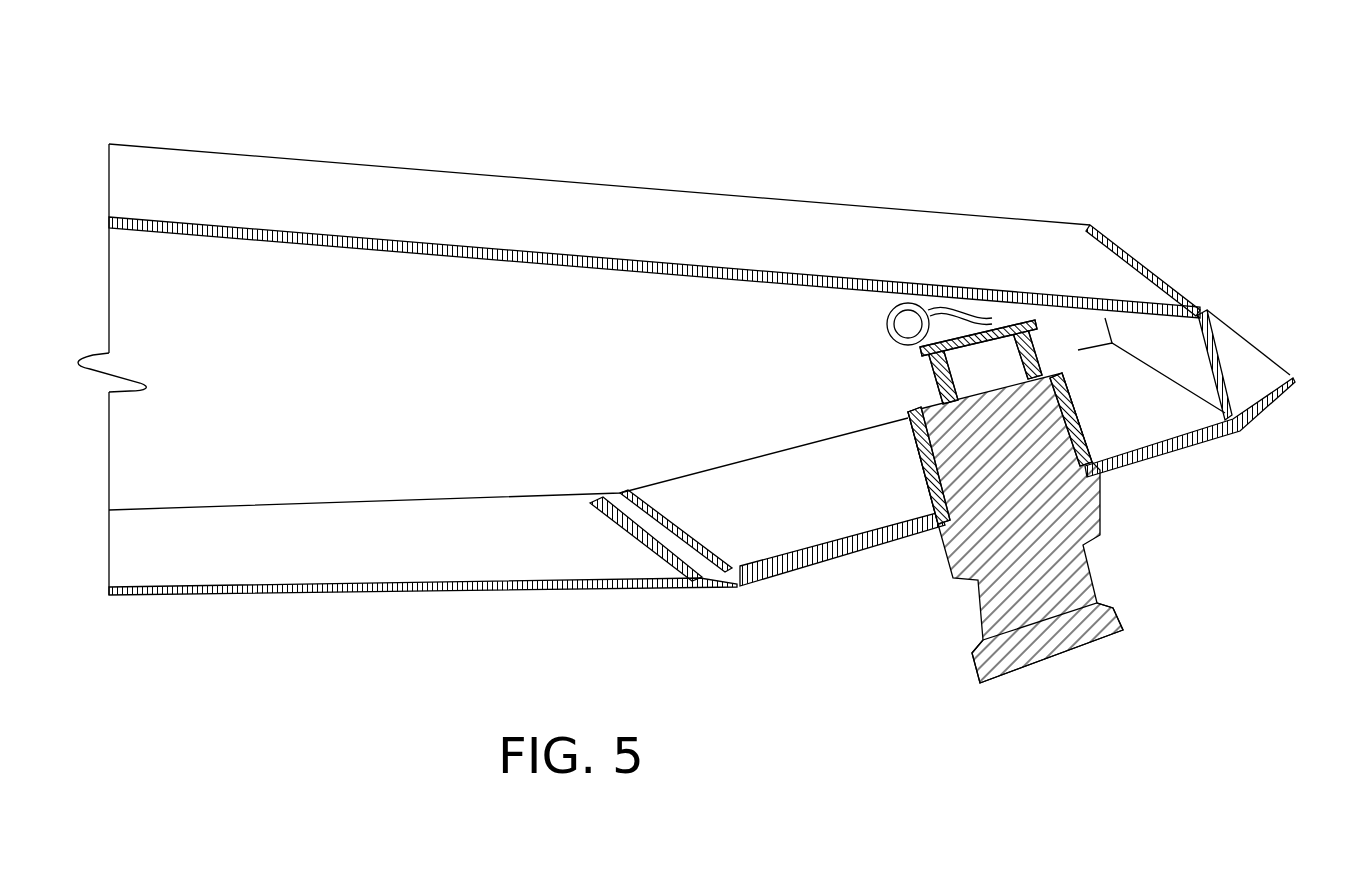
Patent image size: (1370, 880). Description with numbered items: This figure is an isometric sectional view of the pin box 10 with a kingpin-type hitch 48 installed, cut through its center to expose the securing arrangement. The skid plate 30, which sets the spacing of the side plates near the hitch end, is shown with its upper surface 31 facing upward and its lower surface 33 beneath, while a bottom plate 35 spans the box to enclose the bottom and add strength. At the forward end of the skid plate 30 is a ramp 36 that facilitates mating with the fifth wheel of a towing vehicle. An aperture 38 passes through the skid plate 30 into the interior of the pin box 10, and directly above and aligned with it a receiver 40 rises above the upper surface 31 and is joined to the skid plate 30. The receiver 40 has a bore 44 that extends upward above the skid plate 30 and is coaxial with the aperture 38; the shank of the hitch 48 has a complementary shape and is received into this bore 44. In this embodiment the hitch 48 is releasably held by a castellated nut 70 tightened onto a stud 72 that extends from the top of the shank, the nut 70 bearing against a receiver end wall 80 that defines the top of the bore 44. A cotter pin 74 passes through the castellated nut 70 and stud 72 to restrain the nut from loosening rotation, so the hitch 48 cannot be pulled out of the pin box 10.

The pin box 10 is at (675, 100).
The skid plate 30 is at (775, 578).
The upper surface 31 is at (757, 575).
The lower surface 33 is at (830, 558).
The bottom plate 35 is at (242, 593).
The ramp 36 is at (1248, 372).
The aperture 38 is at (1103, 472).
The receiver 40 is at (893, 540).
The bore 44 is at (1085, 410).
The hitch 48 is at (980, 690).
The castellated nut 70 is at (1050, 342).
The stud 72 is at (987, 363).
The cotter pin 74 is at (898, 300).
The receiver end wall 80 is at (1093, 350).